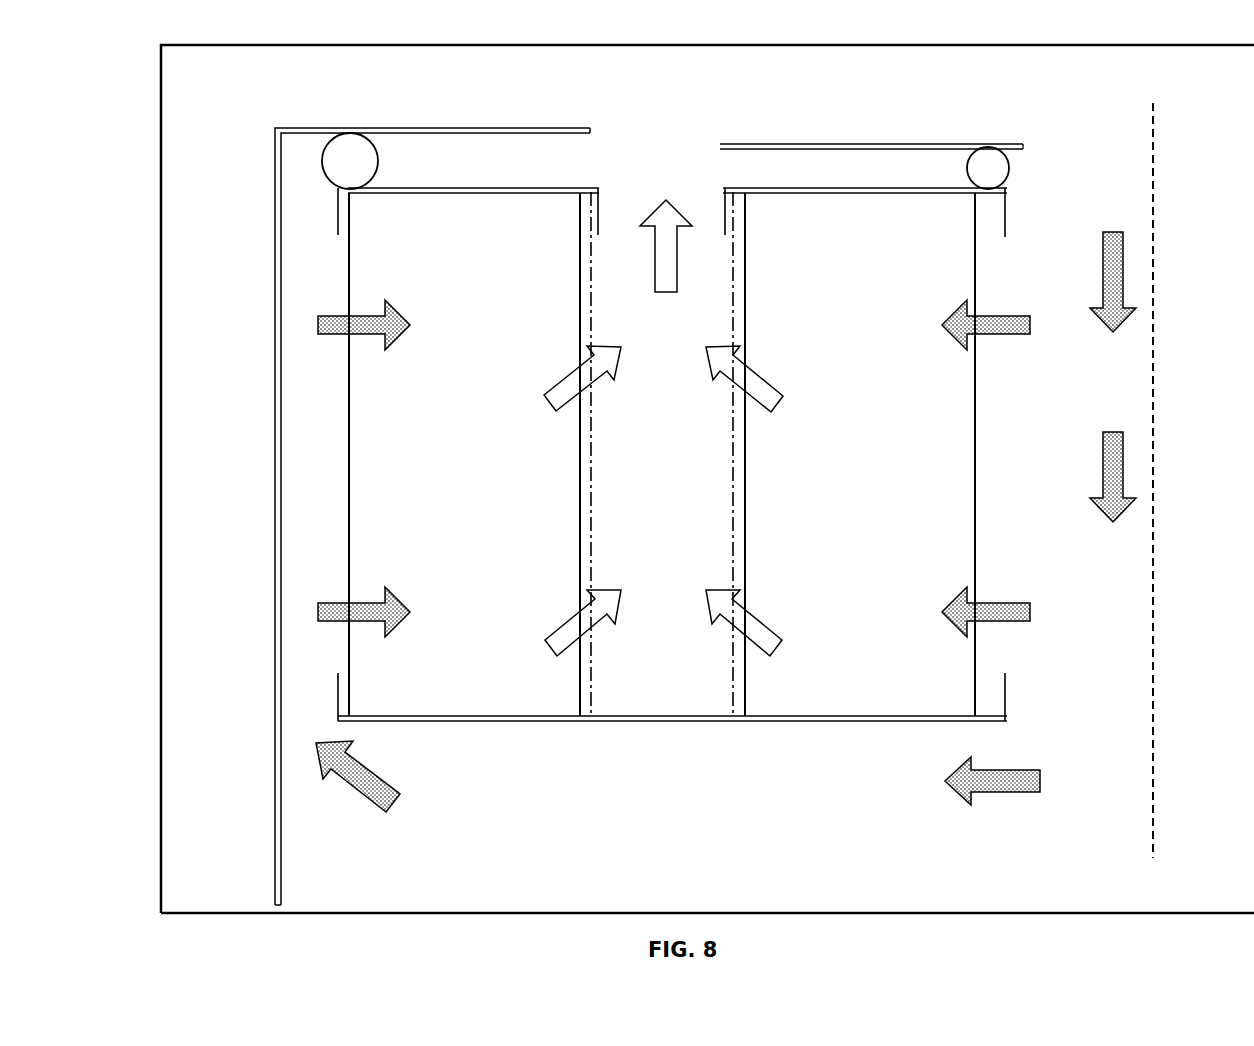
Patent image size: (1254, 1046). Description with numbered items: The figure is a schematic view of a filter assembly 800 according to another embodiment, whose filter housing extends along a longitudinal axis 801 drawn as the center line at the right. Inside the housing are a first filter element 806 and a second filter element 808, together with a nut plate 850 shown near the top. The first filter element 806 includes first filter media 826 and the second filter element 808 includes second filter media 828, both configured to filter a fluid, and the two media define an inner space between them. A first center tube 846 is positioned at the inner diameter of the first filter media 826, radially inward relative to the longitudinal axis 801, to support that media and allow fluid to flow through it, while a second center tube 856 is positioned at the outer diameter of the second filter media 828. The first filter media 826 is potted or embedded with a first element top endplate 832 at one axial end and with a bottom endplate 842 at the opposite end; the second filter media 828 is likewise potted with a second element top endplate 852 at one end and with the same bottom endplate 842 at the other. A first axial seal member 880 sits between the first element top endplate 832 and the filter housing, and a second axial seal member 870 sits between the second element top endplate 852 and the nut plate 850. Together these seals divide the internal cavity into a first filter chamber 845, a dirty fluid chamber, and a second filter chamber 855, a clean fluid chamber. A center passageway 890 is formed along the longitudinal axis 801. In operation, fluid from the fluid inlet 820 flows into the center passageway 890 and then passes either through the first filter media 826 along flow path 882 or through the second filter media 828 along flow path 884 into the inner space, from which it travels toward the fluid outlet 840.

The filter assembly 800 is at (130, 114).
The longitudinal axis 801 is at (1155, 268).
The first filter element 806 is at (357, 268).
The second filter element 808 is at (796, 215).
The fluid inlet 820 is at (1023, 148).
The first filter media 826 is at (382, 646).
The second filter media 828 is at (946, 683).
The first element top endplate 832 is at (446, 190).
The fluid outlet 840 is at (590, 126).
The bottom endplate 842 is at (458, 724).
The first filter chamber 845 is at (1100, 798).
The first center tube 846 is at (588, 711).
The nut plate 850 is at (907, 143).
The second element top endplate 852 is at (945, 190).
The second filter chamber 855 is at (676, 160).
The second center tube 856 is at (738, 711).
The second axial seal member 870 is at (990, 172).
The first axial seal member 880 is at (355, 160).
The flow path 882 is at (1010, 792).
The flow path 884 is at (1005, 608).
The center passageway 890 is at (1100, 590).